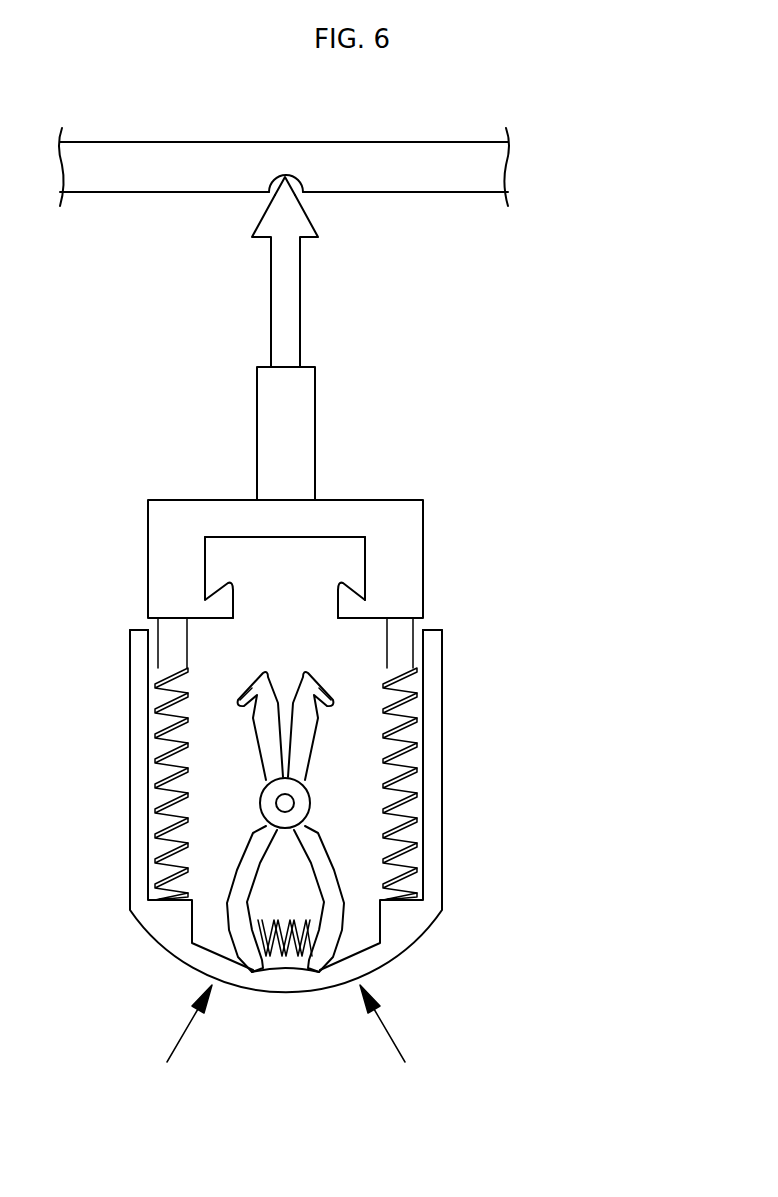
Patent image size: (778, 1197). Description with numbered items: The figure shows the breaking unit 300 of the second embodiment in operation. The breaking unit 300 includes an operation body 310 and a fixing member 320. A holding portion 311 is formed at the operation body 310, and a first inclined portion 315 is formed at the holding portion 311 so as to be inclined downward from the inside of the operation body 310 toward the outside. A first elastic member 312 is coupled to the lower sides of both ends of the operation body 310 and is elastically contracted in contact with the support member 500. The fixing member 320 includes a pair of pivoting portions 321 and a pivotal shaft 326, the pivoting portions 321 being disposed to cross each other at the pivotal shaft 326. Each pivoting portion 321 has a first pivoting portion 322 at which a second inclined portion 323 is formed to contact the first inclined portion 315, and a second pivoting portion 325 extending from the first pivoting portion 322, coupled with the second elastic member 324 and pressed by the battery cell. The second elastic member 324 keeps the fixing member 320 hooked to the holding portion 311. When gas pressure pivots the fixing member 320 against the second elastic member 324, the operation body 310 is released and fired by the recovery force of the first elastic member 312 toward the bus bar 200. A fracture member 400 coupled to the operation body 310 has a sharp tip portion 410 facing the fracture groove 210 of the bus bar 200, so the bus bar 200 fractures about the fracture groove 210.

The bus bar 200 is at (428, 142).
The fracture groove 210 is at (270, 192).
The breaking unit 300 is at (202, 306).
The operation body 310 is at (368, 475).
The holding portion 311 is at (341, 590).
The first elastic member 312 is at (400, 871).
The first inclined portion 315 is at (365, 580).
The fixing member 320 is at (575, 667).
The pivoting portion 321 is at (493, 632).
The first pivoting portion 322 is at (302, 752).
The second inclined portion 323 is at (325, 707).
The second elastic member 324 is at (284, 958).
The second pivoting portion 325 is at (328, 937).
The pivotal shaft 326 is at (282, 803).
The fracture member 400 is at (300, 298).
The sharp tip portion 410 is at (285, 177).
The support member 500 is at (442, 672).